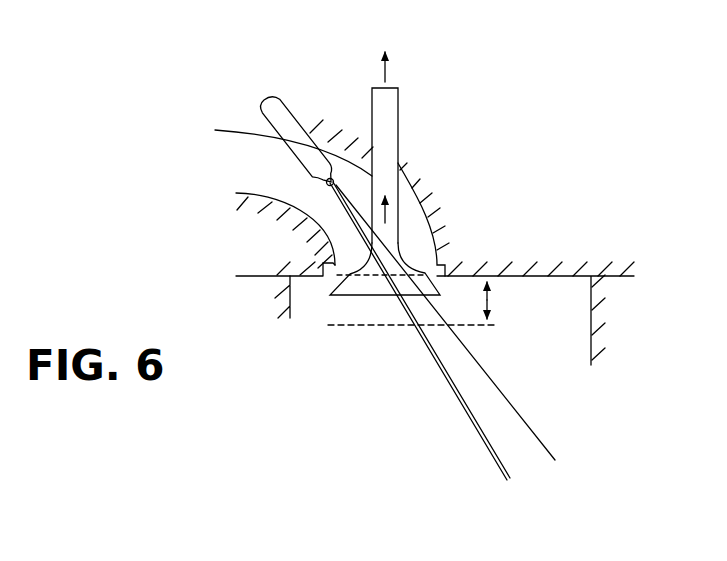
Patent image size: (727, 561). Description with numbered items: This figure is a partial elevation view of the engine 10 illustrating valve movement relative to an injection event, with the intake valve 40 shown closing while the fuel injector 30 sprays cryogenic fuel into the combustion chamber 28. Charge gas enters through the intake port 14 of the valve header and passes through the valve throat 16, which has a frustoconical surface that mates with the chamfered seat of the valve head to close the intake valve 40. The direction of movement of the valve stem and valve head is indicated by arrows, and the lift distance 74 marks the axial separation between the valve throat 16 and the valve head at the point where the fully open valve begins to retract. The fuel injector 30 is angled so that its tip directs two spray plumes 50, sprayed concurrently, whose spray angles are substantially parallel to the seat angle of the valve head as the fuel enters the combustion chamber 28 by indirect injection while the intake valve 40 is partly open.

The engine 10 is at (553, 101).
The intake port 14 is at (243, 182).
The valve throat 16 is at (436, 264).
The combustion chamber 28 is at (334, 363).
The fuel injector 30 is at (286, 108).
The intake valve 40 is at (399, 143).
The spray plume 50 is at (507, 389).
The lift distance 74 is at (490, 300).